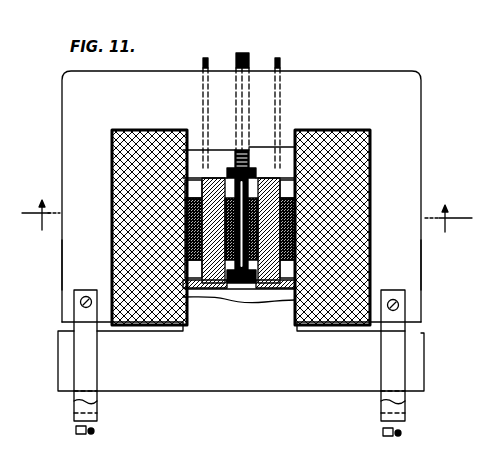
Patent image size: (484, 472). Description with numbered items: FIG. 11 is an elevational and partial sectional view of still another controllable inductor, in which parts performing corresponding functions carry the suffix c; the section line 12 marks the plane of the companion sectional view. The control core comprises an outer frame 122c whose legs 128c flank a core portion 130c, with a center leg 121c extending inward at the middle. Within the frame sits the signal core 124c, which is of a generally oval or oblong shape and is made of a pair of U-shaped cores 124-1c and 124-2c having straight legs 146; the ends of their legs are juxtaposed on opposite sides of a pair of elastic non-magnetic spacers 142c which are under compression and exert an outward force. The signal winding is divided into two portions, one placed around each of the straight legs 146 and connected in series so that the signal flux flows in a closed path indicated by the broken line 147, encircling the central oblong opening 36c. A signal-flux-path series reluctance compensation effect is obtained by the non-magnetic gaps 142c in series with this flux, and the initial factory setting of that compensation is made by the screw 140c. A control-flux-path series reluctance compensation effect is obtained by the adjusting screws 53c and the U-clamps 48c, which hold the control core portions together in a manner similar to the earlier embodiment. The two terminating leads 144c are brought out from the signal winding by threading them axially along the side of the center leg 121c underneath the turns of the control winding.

The frame 122c is at (452, 60).
The frame side legs 128c is at (69, 262).
The base plate 130c is at (232, 392).
The U-clamp 48c is at (98, 409).
The adjusting screw 53c is at (95, 433).
The straight leg 146 is at (241, 227).
The terminating lead 144c is at (207, 60).
The screw 140c is at (245, 56).
The center leg of the control core 121c is at (262, 157).
The central oblong opening 36c is at (198, 216).
The elastic non-magnetic spacer 142c is at (186, 229).
The U-shaped core 124-1c is at (284, 183).
The signal core 124c is at (312, 229).
The U-shaped core 124-2c is at (290, 263).
The broken line 147 is at (212, 291).
The section line 12- 12 is at (245, 219).